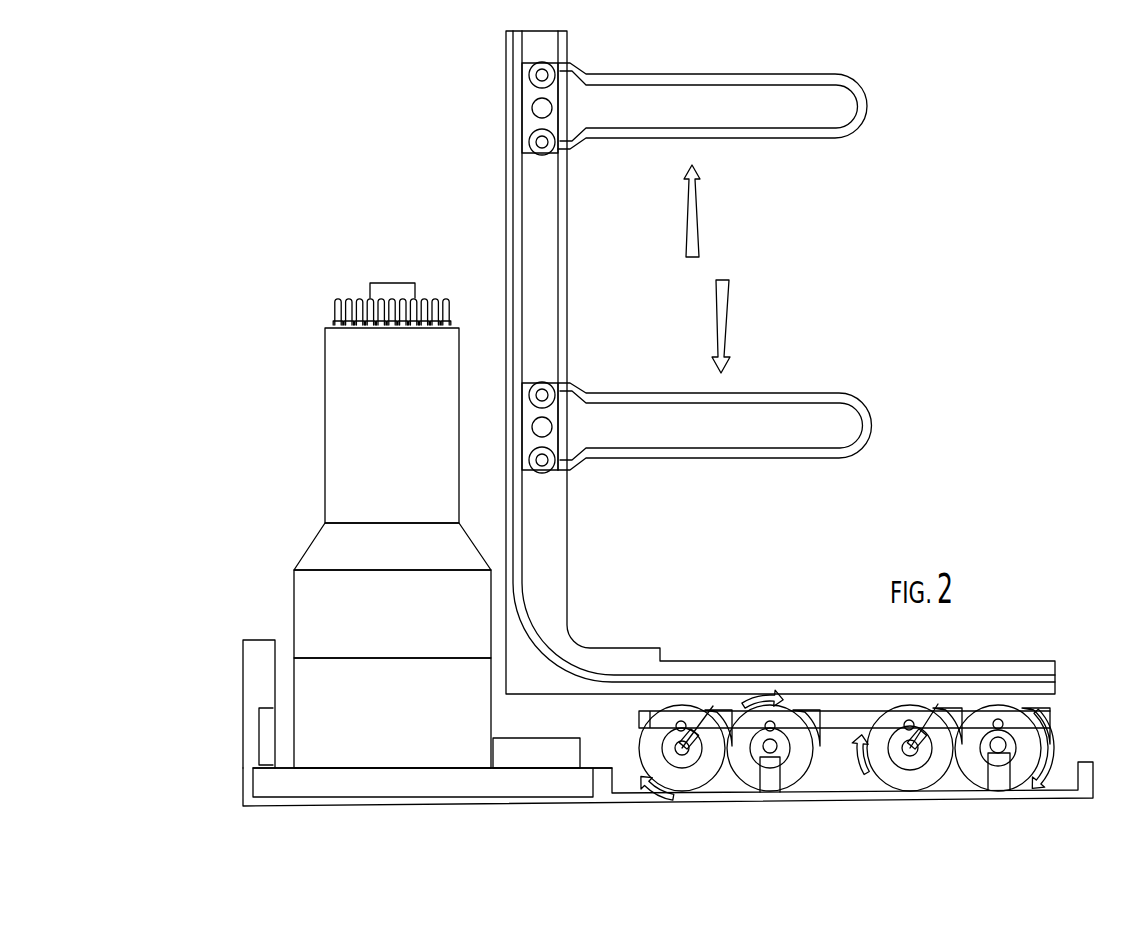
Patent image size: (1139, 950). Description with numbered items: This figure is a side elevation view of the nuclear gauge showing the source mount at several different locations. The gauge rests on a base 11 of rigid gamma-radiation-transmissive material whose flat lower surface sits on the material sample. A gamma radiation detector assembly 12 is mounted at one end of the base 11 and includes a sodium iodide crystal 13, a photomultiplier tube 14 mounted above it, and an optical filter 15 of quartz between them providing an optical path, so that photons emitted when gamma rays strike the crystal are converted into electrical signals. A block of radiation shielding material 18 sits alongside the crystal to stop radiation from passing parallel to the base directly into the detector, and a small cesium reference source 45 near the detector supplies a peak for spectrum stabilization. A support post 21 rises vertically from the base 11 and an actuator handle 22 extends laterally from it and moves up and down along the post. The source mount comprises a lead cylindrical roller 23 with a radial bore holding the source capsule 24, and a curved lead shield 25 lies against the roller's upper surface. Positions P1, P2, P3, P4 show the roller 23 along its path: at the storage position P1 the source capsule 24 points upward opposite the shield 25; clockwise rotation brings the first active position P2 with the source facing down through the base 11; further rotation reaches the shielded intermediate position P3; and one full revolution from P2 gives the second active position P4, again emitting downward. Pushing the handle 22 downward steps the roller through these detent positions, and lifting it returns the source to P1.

The base 11 is at (1075, 795).
The gamma radiation detector assembly 12 is at (378, 525).
The sodium iodide crystal 13 is at (399, 726).
The photomultiplier tube 14 is at (398, 436).
The optical filter 15 is at (399, 630).
The block of radiation shielding material 18 is at (538, 748).
The support post 21 is at (562, 322).
The actuator handle 22 is at (786, 393).
The cylindrical roller 23 is at (867, 766).
The source capsule 24 is at (1003, 773).
The shield 25 is at (1052, 708).
The gamma radiation reference source 45 is at (265, 733).
The inactive storage position P1 is at (682, 773).
The first active position P2 is at (770, 766).
The intermediate position P3 is at (902, 773).
The second active position P4 is at (1074, 728).